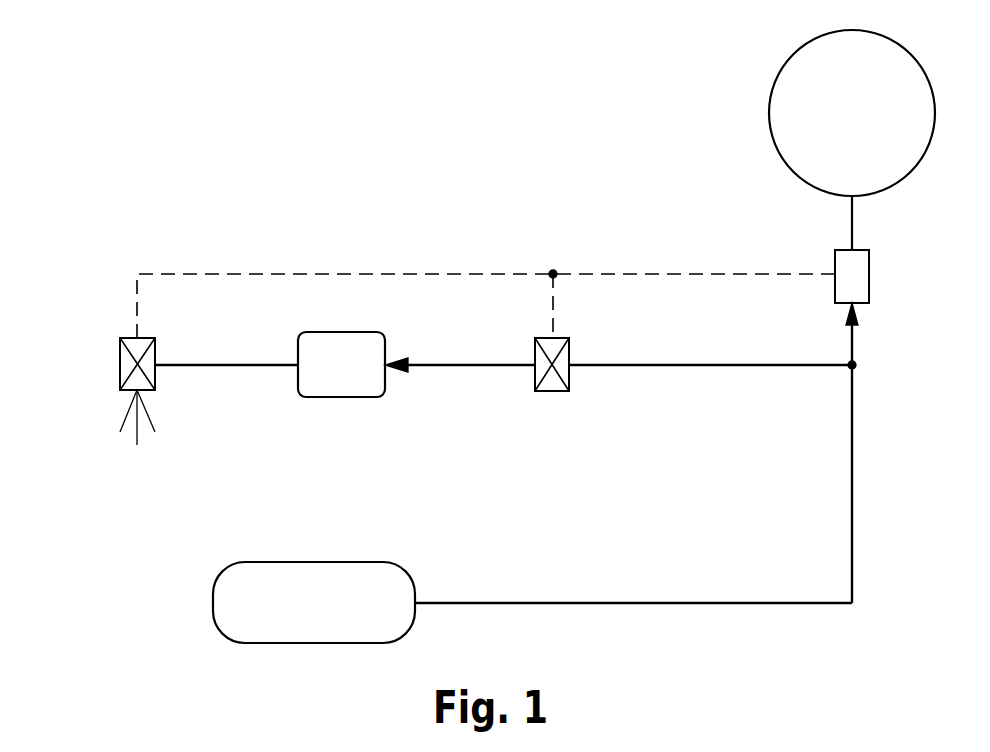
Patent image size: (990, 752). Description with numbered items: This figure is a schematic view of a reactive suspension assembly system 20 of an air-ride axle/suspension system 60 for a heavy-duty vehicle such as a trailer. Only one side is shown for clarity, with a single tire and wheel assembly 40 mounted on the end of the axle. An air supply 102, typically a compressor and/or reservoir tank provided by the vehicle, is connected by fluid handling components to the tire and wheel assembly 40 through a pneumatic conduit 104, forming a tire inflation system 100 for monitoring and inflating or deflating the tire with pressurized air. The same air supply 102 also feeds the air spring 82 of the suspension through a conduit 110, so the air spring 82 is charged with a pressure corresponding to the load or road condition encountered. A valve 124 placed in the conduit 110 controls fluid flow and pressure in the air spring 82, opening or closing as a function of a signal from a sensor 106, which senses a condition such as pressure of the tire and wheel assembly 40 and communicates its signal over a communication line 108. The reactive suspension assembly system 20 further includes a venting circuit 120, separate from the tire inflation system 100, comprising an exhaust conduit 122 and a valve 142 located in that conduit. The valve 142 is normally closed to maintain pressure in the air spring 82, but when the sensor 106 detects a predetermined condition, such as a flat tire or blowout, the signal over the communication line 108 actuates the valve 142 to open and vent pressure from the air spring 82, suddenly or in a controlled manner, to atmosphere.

The reactive suspension assembly system 20 is at (118, 173).
The tire and wheel assembly 40 is at (770, 100).
The air-ride axle/suspension system 60 is at (282, 400).
The air spring 82 is at (362, 398).
The tire inflation system 100 is at (850, 624).
The air supply 102 is at (405, 565).
The conduit 104 is at (852, 540).
The sensor 106 is at (869, 272).
The communication line 108 is at (662, 272).
The conduit 110 is at (595, 367).
The venting circuit 120 is at (166, 464).
The exhaust conduit 122 is at (245, 365).
The valve 124 is at (569, 343).
The valve 142 is at (120, 347).